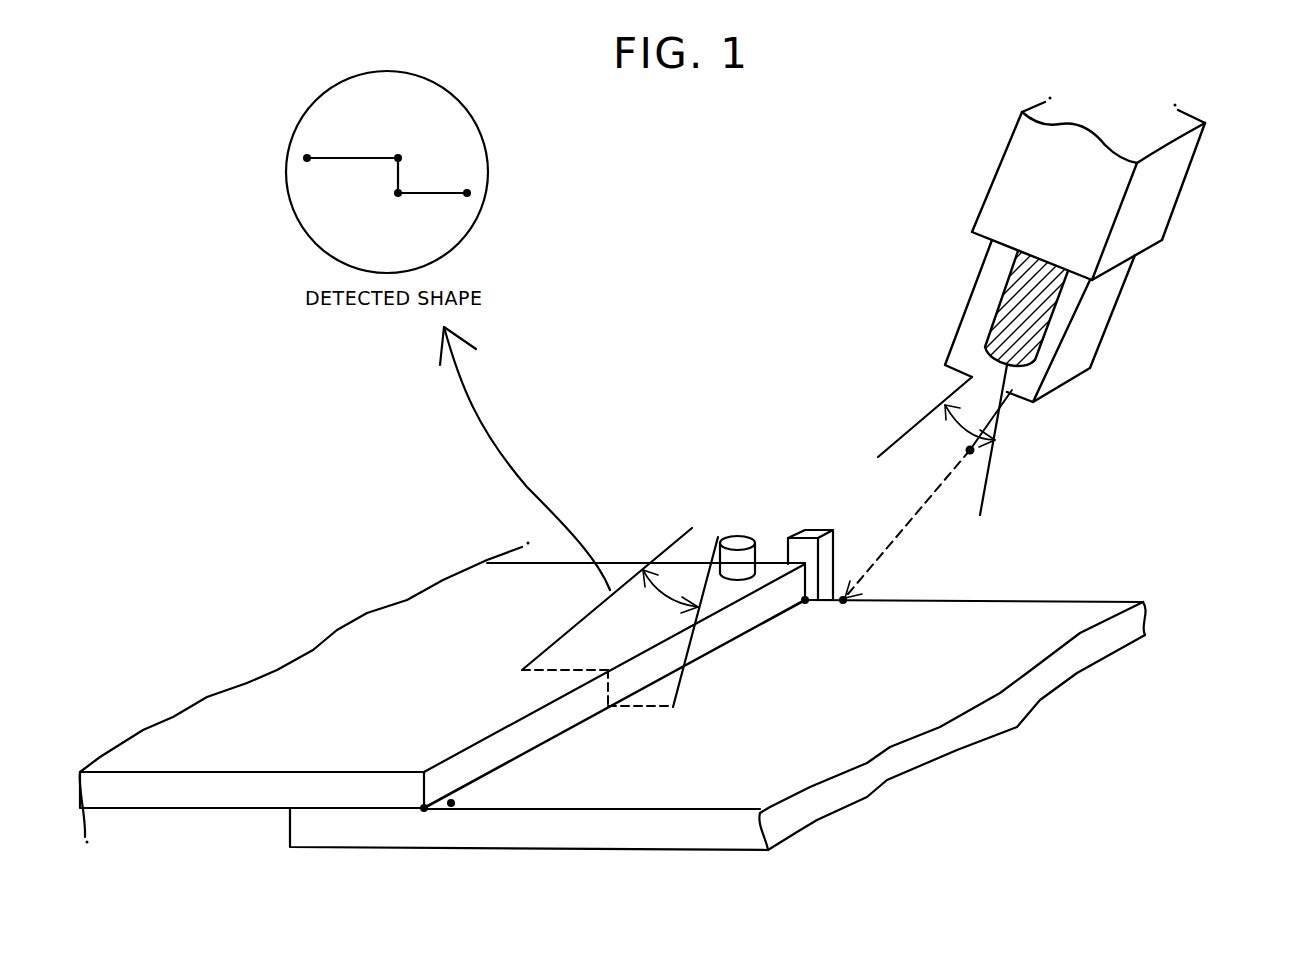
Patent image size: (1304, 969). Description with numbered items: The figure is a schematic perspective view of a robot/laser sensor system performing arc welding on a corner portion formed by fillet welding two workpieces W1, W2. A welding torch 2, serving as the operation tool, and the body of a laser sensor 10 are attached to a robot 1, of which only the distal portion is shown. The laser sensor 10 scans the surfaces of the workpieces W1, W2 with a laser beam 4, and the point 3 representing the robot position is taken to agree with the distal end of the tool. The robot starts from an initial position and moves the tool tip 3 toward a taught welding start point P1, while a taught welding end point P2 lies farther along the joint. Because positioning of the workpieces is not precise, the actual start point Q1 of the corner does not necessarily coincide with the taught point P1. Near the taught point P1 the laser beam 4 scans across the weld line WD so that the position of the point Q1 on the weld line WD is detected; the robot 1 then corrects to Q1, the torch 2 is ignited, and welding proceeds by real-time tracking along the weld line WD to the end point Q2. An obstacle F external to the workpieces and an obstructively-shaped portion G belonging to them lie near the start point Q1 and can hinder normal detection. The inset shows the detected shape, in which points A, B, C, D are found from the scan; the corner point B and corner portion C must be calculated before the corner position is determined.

The robot 1 is at (1183, 197).
The welding torch 2 is at (995, 315).
The tool tip 3 is at (971, 452).
The laser beam 4 is at (677, 532).
The laser sensor 10 is at (1098, 330).
The obstructively-shaped portion G is at (740, 537).
The obstacle F is at (816, 536).
The actual start point Q1 is at (805, 601).
The taught welding start point P1 is at (844, 601).
The welding end point Q2 is at (423, 810).
The taught welding end point P2 is at (453, 802).
The workpiece W1 is at (757, 790).
The workpiece W2 is at (330, 727).
The weld line WD is at (557, 736).
The detected shape point A is at (304, 142).
The corner point B is at (407, 142).
The corner portion C is at (389, 215).
The detected shape point D is at (463, 215).